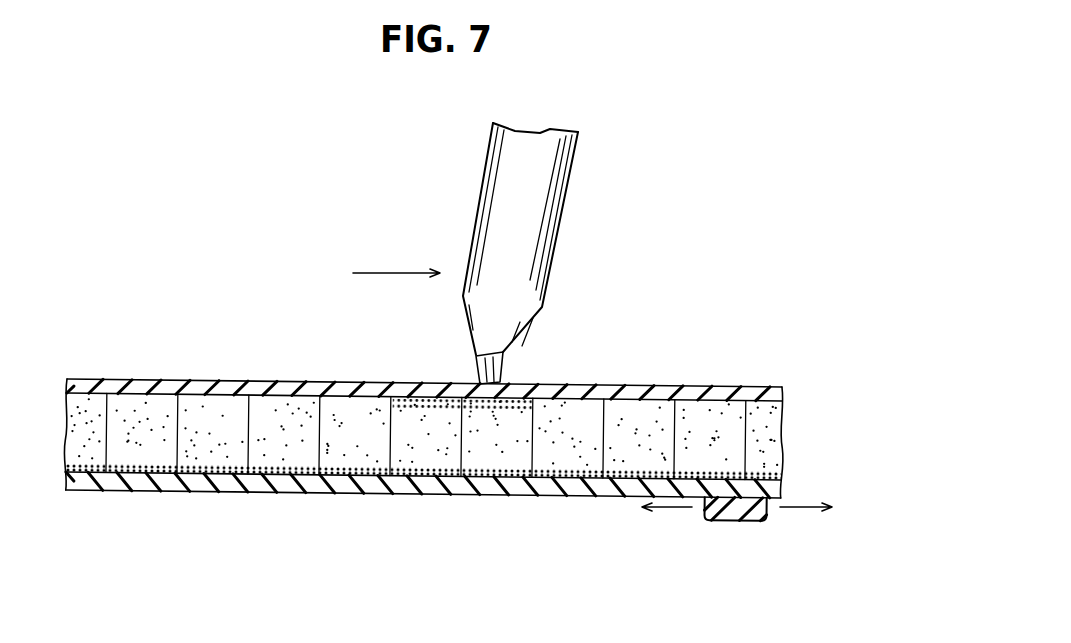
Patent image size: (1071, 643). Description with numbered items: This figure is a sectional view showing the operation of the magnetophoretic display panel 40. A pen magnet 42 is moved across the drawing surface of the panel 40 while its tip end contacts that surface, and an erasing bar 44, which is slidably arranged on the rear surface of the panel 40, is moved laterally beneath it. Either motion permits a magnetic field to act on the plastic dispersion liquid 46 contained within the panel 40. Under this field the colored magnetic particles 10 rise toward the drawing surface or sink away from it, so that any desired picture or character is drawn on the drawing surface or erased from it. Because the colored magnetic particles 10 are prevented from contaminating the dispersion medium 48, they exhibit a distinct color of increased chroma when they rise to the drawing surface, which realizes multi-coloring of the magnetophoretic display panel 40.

The colored magnetic particles 10 is at (343, 467).
The magnetophoretic display panel 40 is at (637, 376).
The pen magnet 42 is at (535, 235).
The erasing bar 44 is at (742, 520).
The plastic dispersion liquid 46 is at (420, 462).
The dispersion medium 48 is at (575, 413).